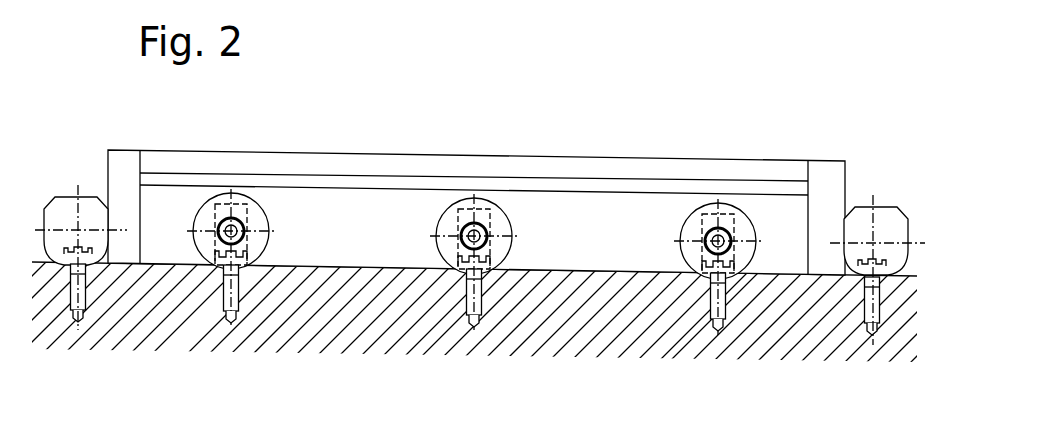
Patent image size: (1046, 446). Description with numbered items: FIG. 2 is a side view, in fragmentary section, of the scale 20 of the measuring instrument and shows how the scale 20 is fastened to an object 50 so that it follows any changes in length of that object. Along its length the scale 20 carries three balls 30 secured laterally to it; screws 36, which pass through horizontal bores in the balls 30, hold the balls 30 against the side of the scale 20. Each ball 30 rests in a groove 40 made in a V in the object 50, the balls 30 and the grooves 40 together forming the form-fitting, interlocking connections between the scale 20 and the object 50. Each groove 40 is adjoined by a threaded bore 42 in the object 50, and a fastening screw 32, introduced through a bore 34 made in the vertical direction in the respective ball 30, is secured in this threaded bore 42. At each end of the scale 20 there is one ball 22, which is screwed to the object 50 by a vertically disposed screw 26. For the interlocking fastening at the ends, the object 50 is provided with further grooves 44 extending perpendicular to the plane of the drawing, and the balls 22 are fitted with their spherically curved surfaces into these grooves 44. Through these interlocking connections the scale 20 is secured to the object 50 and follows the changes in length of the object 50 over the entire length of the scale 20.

The scale 20 is at (585, 157).
The ball 22 is at (62, 200).
The vertically disposed screw 26 is at (72, 296).
The ball 30 is at (265, 218).
The fastening screw 32 is at (240, 300).
The bore 34 is at (225, 205).
The screw 36 is at (218, 228).
The groove 40 is at (245, 278).
The threaded bore 42 is at (222, 295).
The further groove 44 is at (104, 266).
The object 50 is at (357, 316).